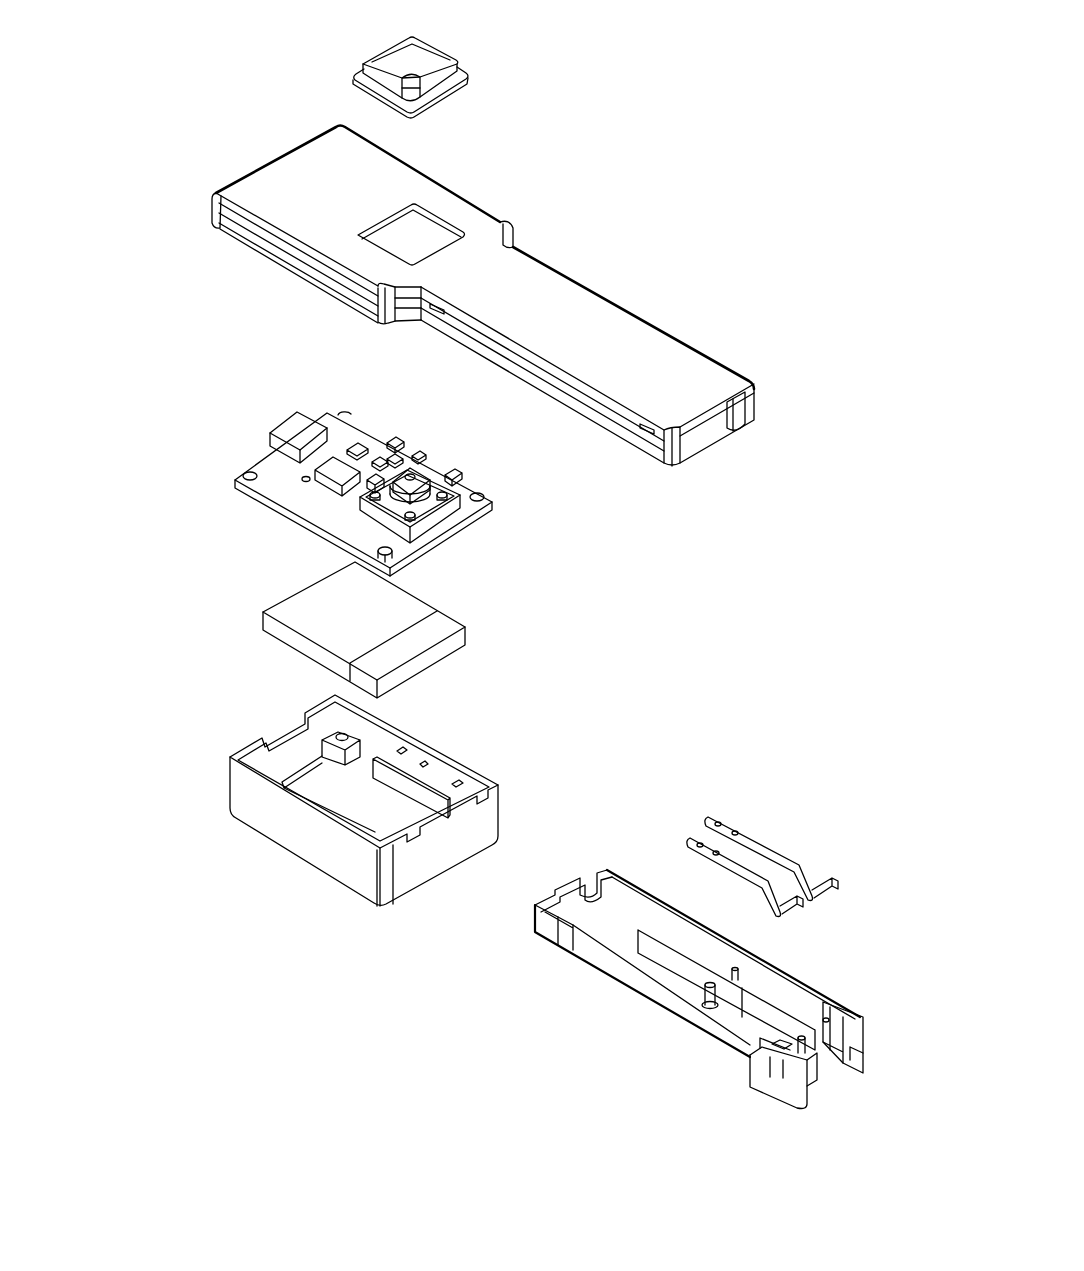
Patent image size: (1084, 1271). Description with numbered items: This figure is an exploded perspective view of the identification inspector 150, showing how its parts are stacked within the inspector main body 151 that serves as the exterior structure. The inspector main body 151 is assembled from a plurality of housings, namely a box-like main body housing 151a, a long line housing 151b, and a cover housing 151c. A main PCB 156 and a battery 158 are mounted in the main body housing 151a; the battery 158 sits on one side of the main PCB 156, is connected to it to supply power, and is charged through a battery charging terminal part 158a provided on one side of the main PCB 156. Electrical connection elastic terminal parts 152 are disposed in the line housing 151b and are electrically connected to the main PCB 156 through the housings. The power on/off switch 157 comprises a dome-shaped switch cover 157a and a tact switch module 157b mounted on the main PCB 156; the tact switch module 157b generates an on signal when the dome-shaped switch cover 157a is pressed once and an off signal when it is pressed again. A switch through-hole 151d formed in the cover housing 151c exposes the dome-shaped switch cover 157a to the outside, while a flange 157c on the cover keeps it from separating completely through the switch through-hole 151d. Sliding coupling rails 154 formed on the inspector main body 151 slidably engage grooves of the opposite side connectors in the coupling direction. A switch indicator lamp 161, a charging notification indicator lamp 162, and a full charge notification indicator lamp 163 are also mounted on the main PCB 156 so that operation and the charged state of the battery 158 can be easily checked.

The identification inspector 150 is at (798, 86).
The inspector main body 151 is at (208, 182).
The main body housing 151a is at (308, 848).
The line housing 151b is at (682, 1007).
The cover housing 151c is at (557, 303).
The switch through-hole 151d is at (423, 240).
The electrical connection elastic terminal part 152 is at (752, 868).
The sliding coupling rail 154 is at (742, 422).
The main PCB 156 is at (290, 502).
The power on/off switch 157 is at (352, 59).
The dome-shaped switch cover 157a is at (447, 66).
The tact switch module 157b is at (415, 484).
The flange 157c is at (465, 82).
The battery 158 is at (270, 624).
The battery charging terminal part 158a is at (293, 430).
The switch indicator lamp 161 is at (460, 477).
The charging notification indicator lamp 162 is at (418, 457).
The full charge notification indicator lamp 163 is at (396, 442).